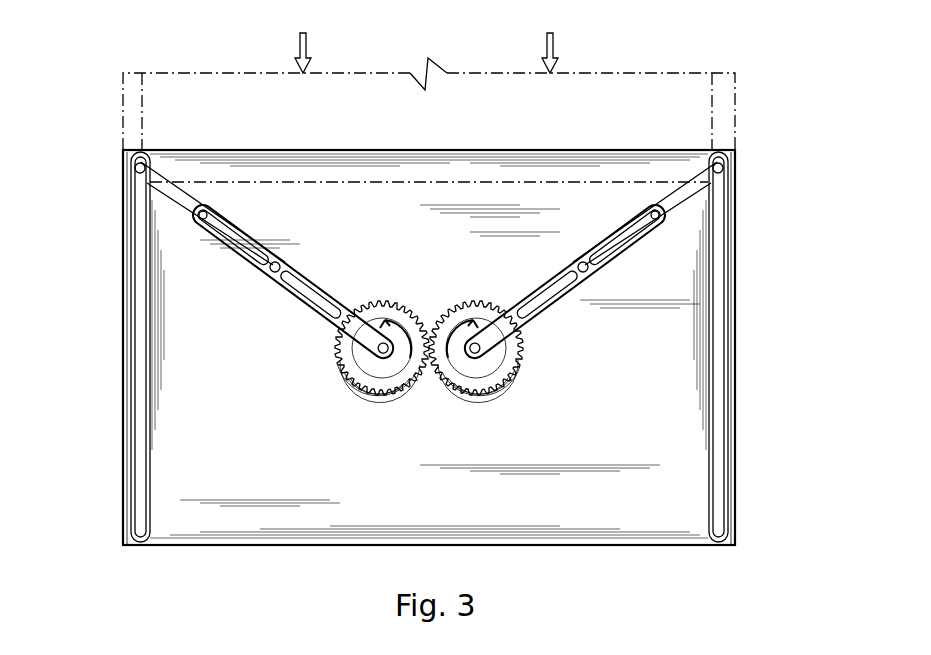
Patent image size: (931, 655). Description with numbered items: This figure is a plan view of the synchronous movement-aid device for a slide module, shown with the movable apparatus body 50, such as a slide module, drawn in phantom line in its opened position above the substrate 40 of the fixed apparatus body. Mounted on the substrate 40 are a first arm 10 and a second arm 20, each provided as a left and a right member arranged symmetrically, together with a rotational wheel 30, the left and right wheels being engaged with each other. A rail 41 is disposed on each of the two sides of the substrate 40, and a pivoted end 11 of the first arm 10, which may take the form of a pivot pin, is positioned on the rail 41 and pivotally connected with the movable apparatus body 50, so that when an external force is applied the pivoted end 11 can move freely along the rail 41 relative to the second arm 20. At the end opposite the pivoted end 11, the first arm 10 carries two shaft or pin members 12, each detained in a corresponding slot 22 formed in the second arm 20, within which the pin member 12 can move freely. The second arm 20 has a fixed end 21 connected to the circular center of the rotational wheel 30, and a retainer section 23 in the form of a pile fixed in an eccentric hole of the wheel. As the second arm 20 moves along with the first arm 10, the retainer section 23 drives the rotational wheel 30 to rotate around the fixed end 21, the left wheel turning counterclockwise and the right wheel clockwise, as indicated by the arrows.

The first arm 10 is at (165, 205).
The pivoted end 11 is at (131, 165).
The shaft or pin member 12 is at (213, 203).
The second arm 20 is at (297, 302).
The fixed end 21 is at (355, 370).
The slot 22 is at (232, 250).
The retainer section 23 is at (395, 298).
The rotational wheel 30 is at (377, 402).
The substrate 40 is at (252, 546).
The rail 41 is at (140, 455).
The movable apparatus body 50 is at (210, 92).